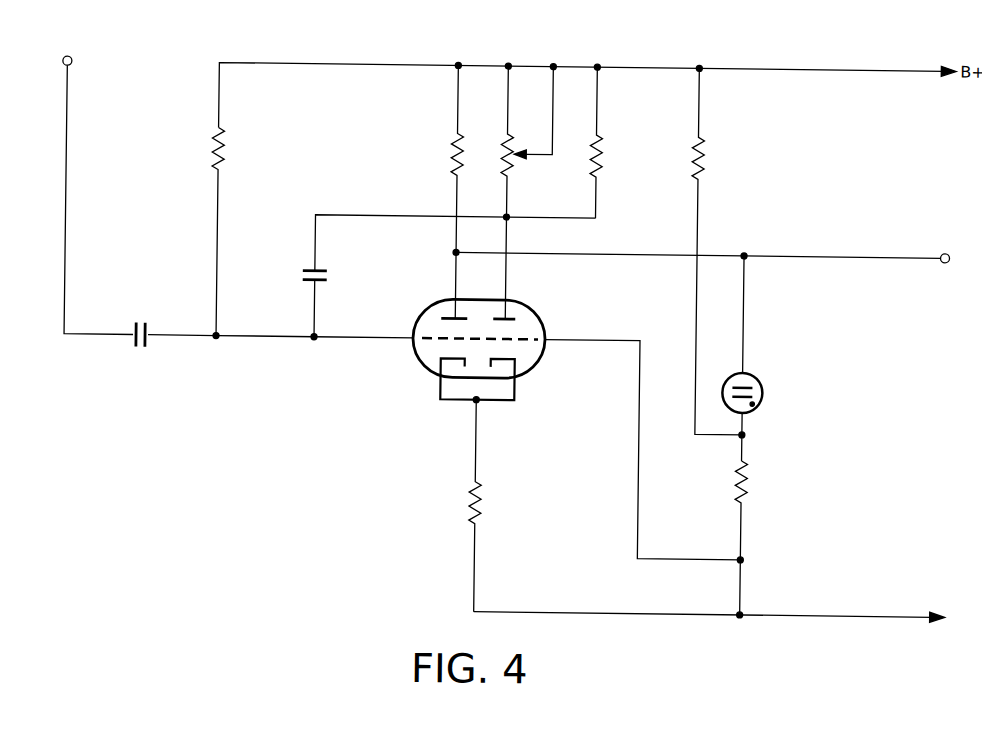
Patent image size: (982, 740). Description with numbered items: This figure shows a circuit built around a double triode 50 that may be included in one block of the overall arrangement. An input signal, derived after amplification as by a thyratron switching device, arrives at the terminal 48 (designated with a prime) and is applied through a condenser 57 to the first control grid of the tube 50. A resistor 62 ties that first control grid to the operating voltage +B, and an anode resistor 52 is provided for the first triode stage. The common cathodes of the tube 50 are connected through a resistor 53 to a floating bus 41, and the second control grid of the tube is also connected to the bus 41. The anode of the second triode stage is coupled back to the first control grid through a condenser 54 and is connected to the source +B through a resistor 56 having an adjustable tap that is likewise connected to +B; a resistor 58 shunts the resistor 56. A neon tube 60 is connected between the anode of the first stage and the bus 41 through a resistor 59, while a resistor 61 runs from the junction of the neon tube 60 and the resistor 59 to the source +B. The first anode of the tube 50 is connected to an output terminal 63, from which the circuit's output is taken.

The floating bus 41 is at (596, 613).
The terminal 48 is at (69, 66).
The double triode 50 is at (428, 375).
The anode resistor 52 is at (452, 159).
The resistor 53 is at (481, 511).
The condenser 54 is at (327, 271).
The resistor 56 is at (516, 172).
The condenser 57 is at (147, 342).
The resistor 58 is at (600, 161).
The resistor 59 is at (749, 488).
The neon tube 60 is at (764, 397).
The resistor 61 is at (702, 161).
The resistor 62 is at (222, 150).
The output terminal 63 is at (940, 249).